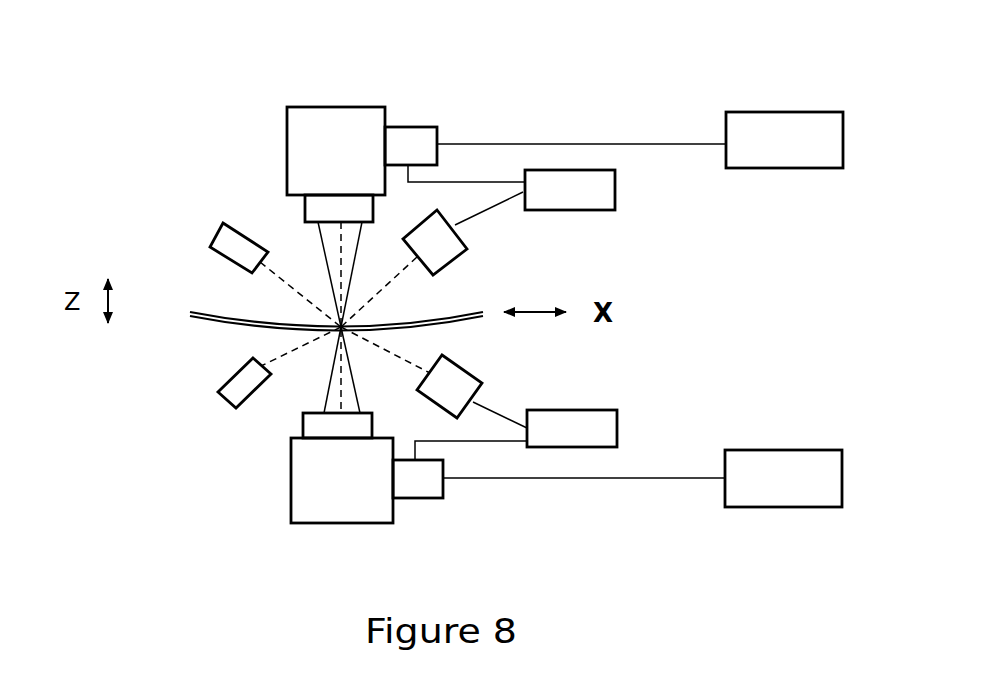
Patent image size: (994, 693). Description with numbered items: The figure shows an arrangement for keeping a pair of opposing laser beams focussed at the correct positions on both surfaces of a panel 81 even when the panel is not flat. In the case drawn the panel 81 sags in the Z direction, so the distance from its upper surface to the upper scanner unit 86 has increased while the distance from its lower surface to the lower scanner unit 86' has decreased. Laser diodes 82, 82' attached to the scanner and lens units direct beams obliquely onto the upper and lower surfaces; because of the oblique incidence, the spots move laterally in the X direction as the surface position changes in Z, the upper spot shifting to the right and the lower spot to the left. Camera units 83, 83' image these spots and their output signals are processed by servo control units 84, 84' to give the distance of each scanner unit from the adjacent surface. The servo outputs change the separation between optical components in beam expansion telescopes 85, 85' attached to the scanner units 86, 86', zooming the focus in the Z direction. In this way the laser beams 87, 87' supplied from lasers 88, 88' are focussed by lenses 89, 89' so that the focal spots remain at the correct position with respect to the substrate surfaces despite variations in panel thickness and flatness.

The panel 81 is at (188, 318).
The laser diode 82 is at (144, 233).
The camera unit 83 is at (589, 247).
The servo control unit 84 is at (659, 201).
The beam expansion telescope 85 is at (407, 104).
The scanner unit 86 is at (285, 145).
The laser beam 87 is at (581, 90).
The laser 88 is at (726, 97).
The lens 89 is at (285, 195).
The laser diode 82' is at (172, 399).
The camera unit 83' is at (592, 386).
The servo control unit 84' is at (676, 422).
The beam expansion telescope 85' is at (443, 512).
The scanner unit 86' is at (256, 488).
The laser beam 87' is at (584, 528).
The laser 88' is at (749, 512).
The lens 89' is at (275, 443).